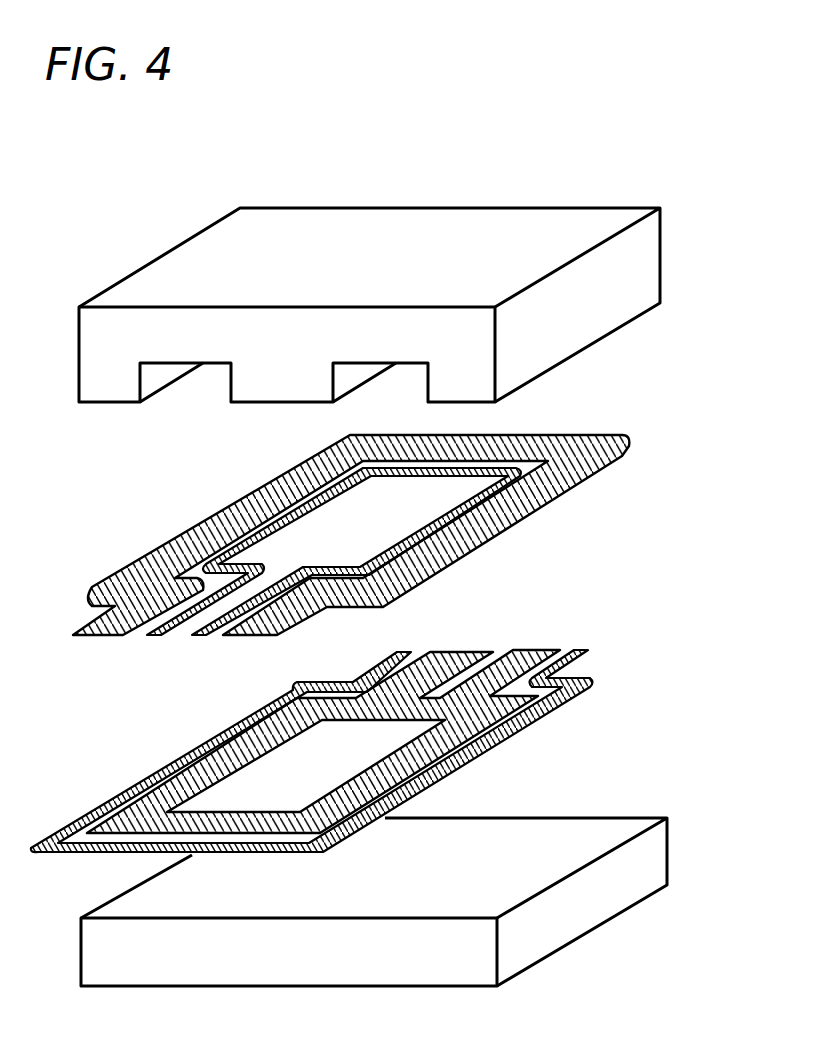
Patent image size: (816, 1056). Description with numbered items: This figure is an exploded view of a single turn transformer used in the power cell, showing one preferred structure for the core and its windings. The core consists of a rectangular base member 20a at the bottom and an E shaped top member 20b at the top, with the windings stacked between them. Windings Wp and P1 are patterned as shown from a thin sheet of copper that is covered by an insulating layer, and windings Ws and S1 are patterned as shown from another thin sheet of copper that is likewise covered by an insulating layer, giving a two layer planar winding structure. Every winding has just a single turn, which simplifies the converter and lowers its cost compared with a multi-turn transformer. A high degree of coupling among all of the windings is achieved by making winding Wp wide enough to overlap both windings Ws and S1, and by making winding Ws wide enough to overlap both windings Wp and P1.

The E shaped top member 20b is at (627, 313).
The rectangular base member 20a is at (575, 922).
The winding Wp is at (160, 545).
The winding P1 is at (313, 502).
The winding S1 is at (193, 740).
The winding Ws is at (275, 737).